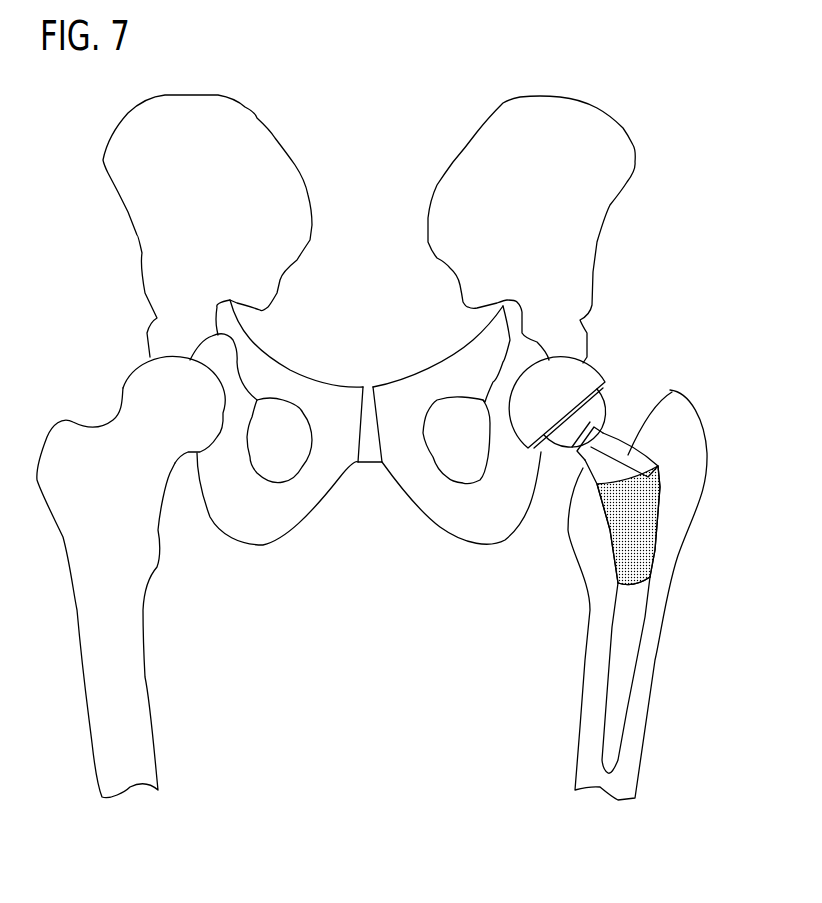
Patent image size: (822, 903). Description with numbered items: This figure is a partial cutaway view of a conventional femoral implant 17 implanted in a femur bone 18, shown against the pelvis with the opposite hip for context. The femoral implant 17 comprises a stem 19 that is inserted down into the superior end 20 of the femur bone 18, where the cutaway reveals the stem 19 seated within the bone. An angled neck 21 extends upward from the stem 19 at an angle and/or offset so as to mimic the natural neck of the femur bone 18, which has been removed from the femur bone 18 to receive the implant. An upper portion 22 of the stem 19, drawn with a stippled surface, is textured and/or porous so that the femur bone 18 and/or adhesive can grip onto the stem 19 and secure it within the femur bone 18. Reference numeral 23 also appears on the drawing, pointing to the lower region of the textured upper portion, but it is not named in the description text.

The femoral implant 17 is at (625, 525).
The femur bone 18 is at (697, 447).
The stem 19 is at (633, 623).
The superior end 20 is at (638, 428).
The angled neck 21 is at (583, 470).
The upper portion 22 is at (660, 523).
The porous coated region 23 is at (628, 558).